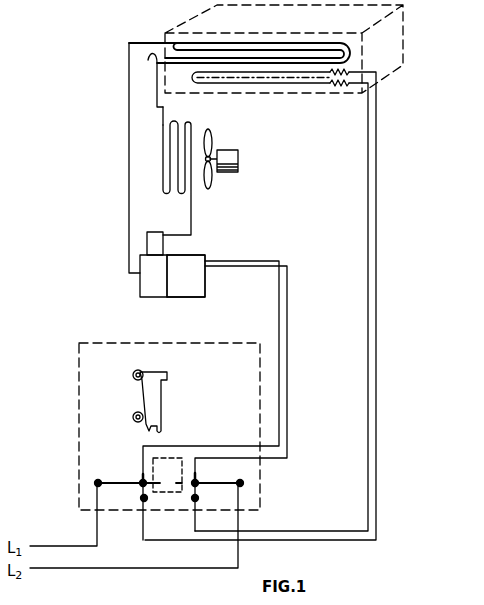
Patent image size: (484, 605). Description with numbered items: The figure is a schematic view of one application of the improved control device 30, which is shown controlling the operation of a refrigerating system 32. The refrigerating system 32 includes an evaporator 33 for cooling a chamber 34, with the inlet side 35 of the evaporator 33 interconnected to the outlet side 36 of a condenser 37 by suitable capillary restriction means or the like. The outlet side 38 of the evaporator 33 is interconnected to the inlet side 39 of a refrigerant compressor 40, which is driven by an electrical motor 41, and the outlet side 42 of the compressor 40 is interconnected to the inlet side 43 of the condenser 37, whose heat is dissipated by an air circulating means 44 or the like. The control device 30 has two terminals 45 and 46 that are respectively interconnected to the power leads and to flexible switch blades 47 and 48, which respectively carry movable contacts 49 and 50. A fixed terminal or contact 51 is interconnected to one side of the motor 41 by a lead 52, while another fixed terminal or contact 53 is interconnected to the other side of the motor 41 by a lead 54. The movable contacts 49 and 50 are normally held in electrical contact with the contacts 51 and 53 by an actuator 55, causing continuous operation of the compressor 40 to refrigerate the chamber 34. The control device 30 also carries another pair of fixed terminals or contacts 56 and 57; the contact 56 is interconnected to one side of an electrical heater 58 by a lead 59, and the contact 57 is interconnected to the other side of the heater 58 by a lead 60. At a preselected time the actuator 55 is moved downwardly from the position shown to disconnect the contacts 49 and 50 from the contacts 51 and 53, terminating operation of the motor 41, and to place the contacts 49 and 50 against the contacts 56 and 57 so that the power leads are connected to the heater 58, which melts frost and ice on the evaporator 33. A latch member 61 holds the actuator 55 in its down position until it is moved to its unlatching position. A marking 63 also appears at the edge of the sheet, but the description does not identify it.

The control device 30 is at (220, 331).
The refrigerating system 32 is at (405, 148).
The evaporator 33 is at (305, 44).
The chamber 34 is at (408, 8).
The inlet side of the evaporator 35 is at (148, 61).
The outlet side of the condenser 36 is at (166, 122).
The condenser 37 is at (170, 157).
The outlet side of the evaporator 38 is at (165, 34).
The inlet side of the compressor 39 is at (140, 275).
The refrigerant compressor 40 is at (158, 285).
The electrical motor 41 is at (190, 262).
The outlet side of the compressor 42 is at (170, 216).
The inlet side of the condenser 43 is at (191, 195).
The air circulating means 44 is at (212, 143).
The terminal 45 is at (96, 483).
The terminal 46 is at (243, 483).
The flexible switch blade 47 is at (108, 488).
The flexible switch blade 48 is at (205, 487).
The movable contact 49 is at (143, 480).
The movable contact 50 is at (190, 488).
The fixed terminal or contact 51 is at (143, 475).
The lead 52 is at (279, 326).
The fixed terminal or contact 53 is at (195, 475).
The lead 54 is at (287, 377).
The actuator 55 is at (183, 457).
The fixed terminal or contact 56 is at (143, 503).
The fixed terminal or contact 57 is at (194, 502).
The electrical heater 58 is at (325, 88).
The lead 59 is at (377, 290).
The lead 60 is at (368, 303).
The latch member 61 is at (163, 397).
The sheet marking 63 is at (470, 597).